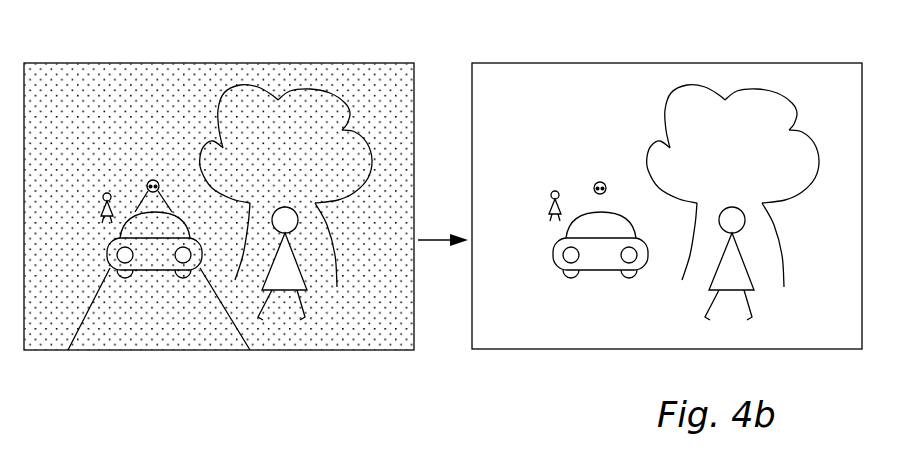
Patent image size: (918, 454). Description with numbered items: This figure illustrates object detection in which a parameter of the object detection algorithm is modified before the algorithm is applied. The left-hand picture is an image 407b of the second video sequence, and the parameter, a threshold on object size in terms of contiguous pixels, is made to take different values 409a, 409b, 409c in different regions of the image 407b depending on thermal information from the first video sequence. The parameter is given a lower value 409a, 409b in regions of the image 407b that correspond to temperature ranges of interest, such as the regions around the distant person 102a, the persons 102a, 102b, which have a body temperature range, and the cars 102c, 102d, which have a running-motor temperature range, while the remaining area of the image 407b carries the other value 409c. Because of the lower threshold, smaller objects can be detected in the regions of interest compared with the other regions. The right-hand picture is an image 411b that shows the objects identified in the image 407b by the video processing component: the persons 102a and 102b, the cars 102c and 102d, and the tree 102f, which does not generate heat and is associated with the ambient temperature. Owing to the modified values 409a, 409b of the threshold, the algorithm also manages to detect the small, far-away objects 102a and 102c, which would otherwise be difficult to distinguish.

The image of the second video sequence 407b is at (199, 62).
The parameter value 409a is at (100, 199).
The parameter value 409b is at (151, 180).
The parameter value 409c is at (98, 84).
The image showing identified objects 411b is at (597, 62).
The person 102a is at (550, 207).
The person 102b is at (757, 293).
The car 102c is at (600, 181).
The car 102d is at (602, 273).
The tree 102f is at (655, 123).